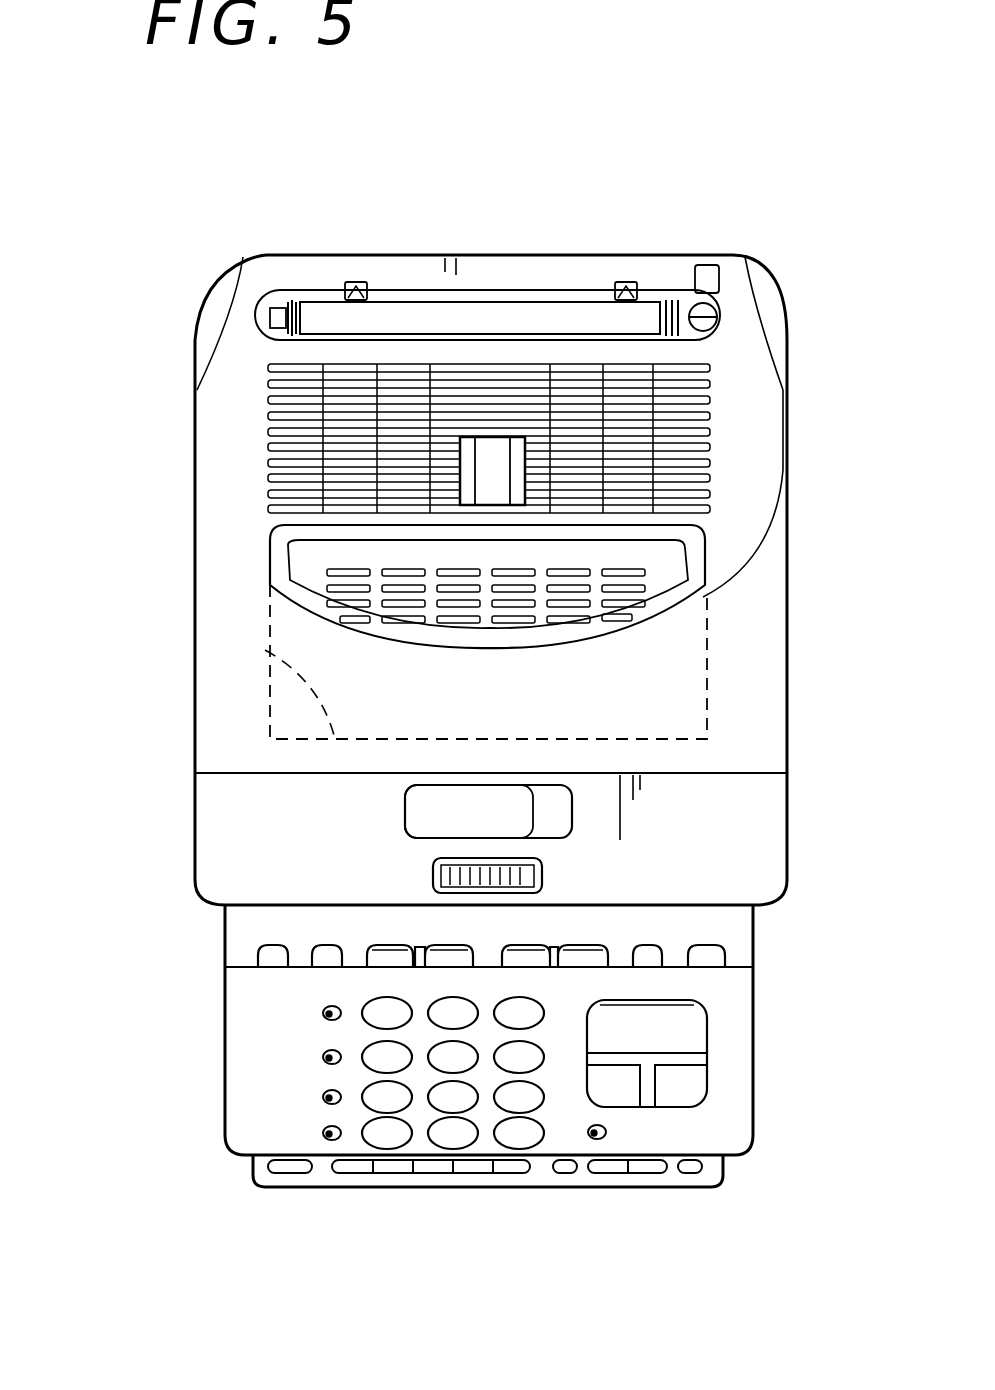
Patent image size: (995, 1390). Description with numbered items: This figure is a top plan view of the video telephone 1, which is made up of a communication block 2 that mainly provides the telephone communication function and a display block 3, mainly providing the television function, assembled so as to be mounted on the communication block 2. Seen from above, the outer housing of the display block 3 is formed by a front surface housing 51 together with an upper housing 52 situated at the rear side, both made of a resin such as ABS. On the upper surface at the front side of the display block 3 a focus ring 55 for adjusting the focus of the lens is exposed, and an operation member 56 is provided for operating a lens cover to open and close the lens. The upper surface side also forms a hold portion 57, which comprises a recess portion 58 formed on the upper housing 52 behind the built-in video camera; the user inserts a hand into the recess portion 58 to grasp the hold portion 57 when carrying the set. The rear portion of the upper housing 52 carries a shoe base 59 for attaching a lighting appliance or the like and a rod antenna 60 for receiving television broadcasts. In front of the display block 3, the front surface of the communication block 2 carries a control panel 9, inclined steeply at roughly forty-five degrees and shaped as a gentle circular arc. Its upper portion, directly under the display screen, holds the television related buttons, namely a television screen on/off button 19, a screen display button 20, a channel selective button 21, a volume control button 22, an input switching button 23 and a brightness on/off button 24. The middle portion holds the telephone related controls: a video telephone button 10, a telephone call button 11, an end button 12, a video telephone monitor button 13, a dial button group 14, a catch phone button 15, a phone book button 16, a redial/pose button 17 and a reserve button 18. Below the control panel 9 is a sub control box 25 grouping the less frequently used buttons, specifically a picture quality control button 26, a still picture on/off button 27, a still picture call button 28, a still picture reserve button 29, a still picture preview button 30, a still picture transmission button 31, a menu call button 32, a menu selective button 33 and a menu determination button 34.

The video telephone 1 is at (592, 242).
The communication block 2 is at (232, 1153).
The display block 3 is at (190, 440).
The control panel 9 is at (738, 1052).
The video telephone button 10 is at (678, 1020).
The telephone call button 11 is at (622, 1086).
The end button 12 is at (690, 1075).
The video telephone monitor button 13 is at (608, 1132).
The dial button group 14 is at (365, 993).
The catch phone button 15 is at (322, 1013).
The phone book button 16 is at (322, 1057).
The redial/pose button 17 is at (322, 1097).
The reserve button 18 is at (322, 1133).
The television screen on/off button 19 is at (705, 950).
The screen display button 20 is at (652, 950).
The channel selective button 21 is at (585, 945).
The volume control button 22 is at (395, 945).
The input switching button 23 is at (322, 945).
The brightness on/off button 24 is at (268, 947).
The sub control box 25 is at (320, 1175).
The picture quality control button 26 is at (290, 1170).
The still picture on/off button 27 is at (353, 1172).
The still picture call button 28 is at (392, 1172).
The still picture reserve button 29 is at (433, 1172).
The still picture preview button 30 is at (471, 1172).
The still picture transmission button 31 is at (512, 1172).
The menu call button 32 is at (692, 1175).
The menu selective button 33 is at (620, 1175).
The menu determination button 34 is at (566, 1175).
The front surface housing 51 is at (762, 795).
The upper housing 52 is at (752, 462).
The focus ring 55 is at (468, 860).
The operation member 56 is at (495, 805).
The hold portion 57 is at (500, 672).
The recess portion 58 is at (265, 650).
The shoe base 59 is at (500, 468).
The rod antenna 60 is at (395, 305).